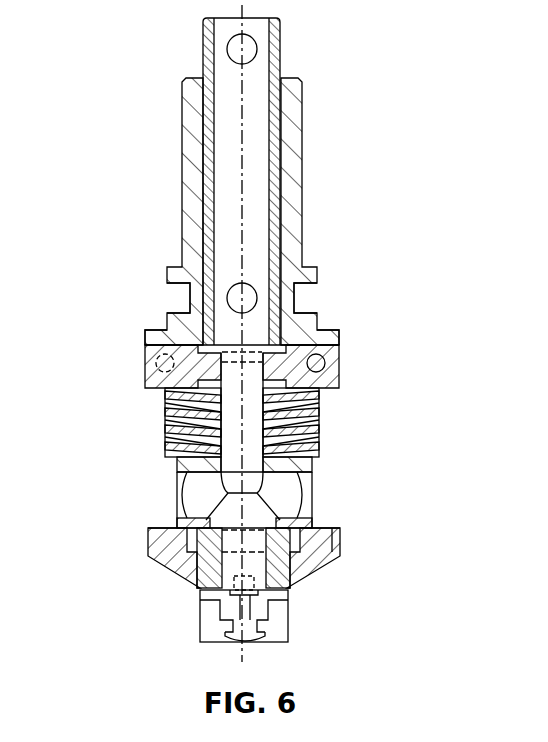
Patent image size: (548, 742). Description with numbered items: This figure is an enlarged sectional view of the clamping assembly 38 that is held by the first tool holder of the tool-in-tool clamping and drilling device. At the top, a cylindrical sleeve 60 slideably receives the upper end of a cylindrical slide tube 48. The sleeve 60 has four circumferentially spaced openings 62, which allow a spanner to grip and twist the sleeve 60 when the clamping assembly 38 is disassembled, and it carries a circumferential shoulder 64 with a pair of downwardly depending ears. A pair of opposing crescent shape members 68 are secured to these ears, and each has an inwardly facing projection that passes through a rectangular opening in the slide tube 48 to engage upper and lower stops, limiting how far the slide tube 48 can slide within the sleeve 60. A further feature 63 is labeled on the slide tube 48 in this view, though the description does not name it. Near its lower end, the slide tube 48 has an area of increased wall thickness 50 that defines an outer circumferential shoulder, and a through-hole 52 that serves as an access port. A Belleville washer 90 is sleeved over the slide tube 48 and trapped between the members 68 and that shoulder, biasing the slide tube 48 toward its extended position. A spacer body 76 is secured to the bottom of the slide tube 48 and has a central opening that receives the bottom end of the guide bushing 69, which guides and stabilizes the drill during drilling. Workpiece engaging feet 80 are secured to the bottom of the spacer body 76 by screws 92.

The clamping assembly 38 is at (412, 190).
The slide tube 48 is at (274, 50).
The cylindrical sleeve 60 is at (300, 147).
The circumferentially spaced openings 62 is at (158, 295).
The cross hole 63 is at (258, 298).
The circumferential shoulder 64 is at (147, 340).
The crescent shape members 68 is at (330, 362).
The Belleville washer 90 is at (323, 412).
The area of increased wall thickness 50 is at (283, 495).
The through-hole 52 is at (180, 495).
The guide bushing 69 is at (284, 528).
The spacer body 76 is at (342, 545).
The workpiece engaging feet 80 is at (289, 622).
The screws 92 is at (228, 632).